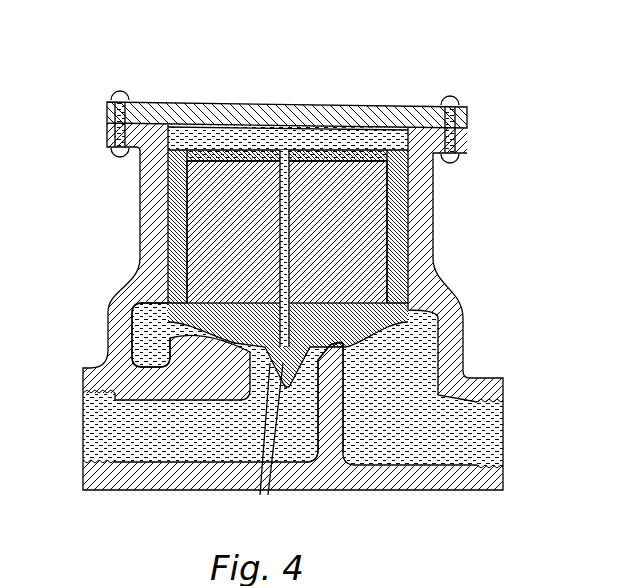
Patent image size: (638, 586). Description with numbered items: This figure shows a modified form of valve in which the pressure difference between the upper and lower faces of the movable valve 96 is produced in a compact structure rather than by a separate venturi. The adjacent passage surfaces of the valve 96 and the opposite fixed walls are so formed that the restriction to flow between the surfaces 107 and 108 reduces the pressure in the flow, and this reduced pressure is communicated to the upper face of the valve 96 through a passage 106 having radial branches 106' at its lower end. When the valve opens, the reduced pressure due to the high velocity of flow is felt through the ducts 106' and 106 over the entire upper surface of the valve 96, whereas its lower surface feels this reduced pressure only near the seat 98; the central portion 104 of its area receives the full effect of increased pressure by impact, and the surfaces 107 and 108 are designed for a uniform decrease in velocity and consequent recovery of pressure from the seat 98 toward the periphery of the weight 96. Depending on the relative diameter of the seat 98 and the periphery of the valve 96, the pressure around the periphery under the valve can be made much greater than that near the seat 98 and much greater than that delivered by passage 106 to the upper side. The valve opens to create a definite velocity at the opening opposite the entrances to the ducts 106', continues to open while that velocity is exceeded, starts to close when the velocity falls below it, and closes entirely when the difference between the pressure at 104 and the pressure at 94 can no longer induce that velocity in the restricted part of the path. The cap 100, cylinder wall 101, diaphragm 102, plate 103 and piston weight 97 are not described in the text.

The outlet pressure region 94 is at (465, 432).
The valve 96 is at (166, 183).
The piston weight 97 is at (203, 214).
The seat 98 is at (320, 350).
The cap 100 is at (350, 106).
The cylinder wall 101 is at (418, 243).
The diaphragm 102 is at (376, 142).
The gasket plate 103 is at (407, 150).
The central portion 104 is at (348, 403).
The passage 106 is at (389, 248).
The radial branches 106' is at (261, 439).
The passage surface 107 is at (223, 340).
The passage surface 108 is at (163, 300).